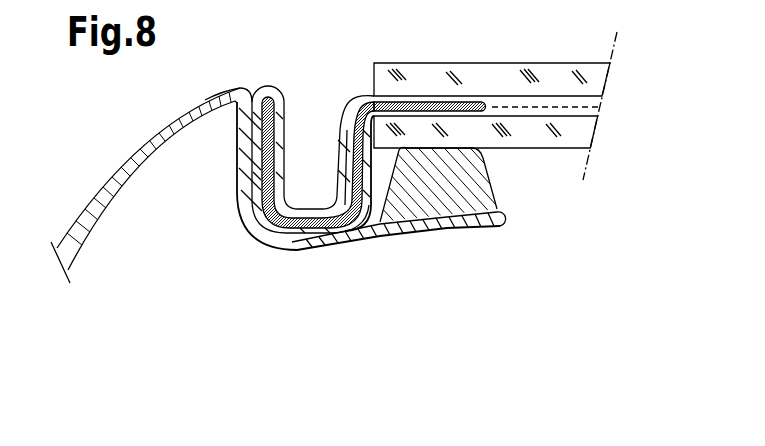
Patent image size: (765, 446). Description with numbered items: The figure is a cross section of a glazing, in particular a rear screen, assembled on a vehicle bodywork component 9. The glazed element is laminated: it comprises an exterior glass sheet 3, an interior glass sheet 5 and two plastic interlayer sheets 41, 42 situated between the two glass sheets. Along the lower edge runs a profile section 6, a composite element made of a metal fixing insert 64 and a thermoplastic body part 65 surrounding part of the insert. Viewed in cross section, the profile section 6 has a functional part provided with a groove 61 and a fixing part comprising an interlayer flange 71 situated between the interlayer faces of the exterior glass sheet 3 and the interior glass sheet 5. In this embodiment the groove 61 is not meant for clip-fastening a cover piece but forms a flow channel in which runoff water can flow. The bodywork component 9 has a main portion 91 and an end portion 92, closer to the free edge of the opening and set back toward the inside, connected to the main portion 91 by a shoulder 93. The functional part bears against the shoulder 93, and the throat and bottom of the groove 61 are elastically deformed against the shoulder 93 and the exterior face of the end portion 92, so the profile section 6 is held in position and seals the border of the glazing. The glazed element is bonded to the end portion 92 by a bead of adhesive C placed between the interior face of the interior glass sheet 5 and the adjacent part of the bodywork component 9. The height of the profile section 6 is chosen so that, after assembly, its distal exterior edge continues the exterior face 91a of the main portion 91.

The exterior glass sheet 3 is at (550, 78).
The plastic interlayer sheet 41 is at (597, 93).
The plastic interlayer sheet 42 is at (584, 110).
The interior glass sheet 5 is at (541, 150).
The interlayer flange 71 is at (425, 98).
The profile section 6 is at (300, 113).
The shoulder 93 is at (226, 200).
The body part 65 is at (350, 98).
The groove 61 is at (292, 193).
The fixing insert 64 is at (299, 251).
The end portion 92 is at (341, 254).
The bead of adhesive C is at (485, 185).
The bodywork component 9 is at (385, 246).
The main portion 91 is at (140, 142).
The exterior face 91a is at (211, 84).